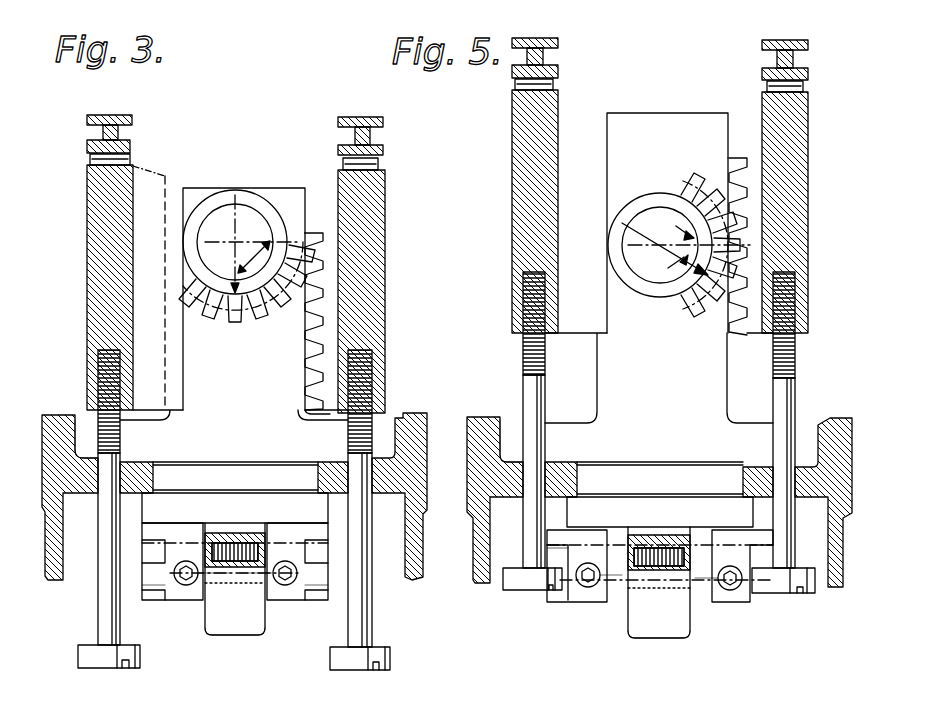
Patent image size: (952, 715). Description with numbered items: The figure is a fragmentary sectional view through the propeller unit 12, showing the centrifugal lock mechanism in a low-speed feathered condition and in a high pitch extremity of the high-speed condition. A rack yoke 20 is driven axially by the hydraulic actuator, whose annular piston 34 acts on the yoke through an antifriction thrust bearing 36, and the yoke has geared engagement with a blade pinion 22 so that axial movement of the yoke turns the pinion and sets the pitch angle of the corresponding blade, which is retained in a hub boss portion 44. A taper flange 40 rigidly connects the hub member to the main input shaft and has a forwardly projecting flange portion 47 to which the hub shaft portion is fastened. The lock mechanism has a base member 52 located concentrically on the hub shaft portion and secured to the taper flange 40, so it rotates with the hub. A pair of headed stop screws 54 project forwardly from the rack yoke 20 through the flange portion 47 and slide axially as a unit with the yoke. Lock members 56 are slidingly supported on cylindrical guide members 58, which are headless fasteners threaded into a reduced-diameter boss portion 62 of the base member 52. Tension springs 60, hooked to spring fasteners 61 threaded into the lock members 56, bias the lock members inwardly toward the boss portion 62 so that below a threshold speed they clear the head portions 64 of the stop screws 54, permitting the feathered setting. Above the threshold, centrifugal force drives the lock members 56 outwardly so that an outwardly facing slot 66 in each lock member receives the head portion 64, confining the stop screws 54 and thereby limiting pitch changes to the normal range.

In FIG. 3, the propeller unit 12 is at (246, 96).
In FIG. 5, the propeller unit 12 is at (580, 32).
In FIG. 3, the rack yoke 20 is at (300, 365).
In FIG. 5, the rack yoke 20 is at (735, 322).
In FIG. 3, the blade pinion 22 is at (258, 322).
In FIG. 5, the blade pinion 22 is at (688, 312).
In FIG. 3, the annular piston 34 is at (340, 122).
In FIG. 5, the annular piston 34 is at (765, 46).
In FIG. 3, the antifriction thrust bearing 36 is at (343, 163).
In FIG. 5, the antifriction thrust bearing 36 is at (768, 87).
In FIG. 3, the taper flange 40 is at (238, 414).
In FIG. 5, the taper flange 40 is at (662, 415).
In FIG. 3, the hub boss portion 44 is at (62, 592).
In FIG. 5, the hub boss portion 44 is at (482, 592).
In FIG. 3, the flange portion 47 is at (80, 418).
In FIG. 5, the flange portion 47 is at (503, 420).
In FIG. 3, the base member 52 is at (292, 521).
In FIG. 5, the base member 52 is at (744, 524).
In FIG. 3, the stop screw 54 is at (372, 602).
In FIG. 5, the stop screw 54 is at (523, 392).
In FIG. 3, the lock member 56 is at (267, 600).
In FIG. 5, the lock member 56 is at (718, 605).
In FIG. 3, the guide member 58 is at (322, 558).
In FIG. 5, the guide member 58 is at (622, 545).
In FIG. 3, the tension spring 60 is at (262, 590).
In FIG. 5, the tension spring 60 is at (686, 594).
In FIG. 3, the spring fastener 61 is at (184, 586).
In FIG. 5, the spring fastener 61 is at (586, 590).
In FIG. 3, the boss portion 62 is at (228, 637).
In FIG. 5, the boss portion 62 is at (655, 640).
In FIG. 3, the head portion 64 is at (81, 647).
In FIG. 5, the head portion 64 is at (517, 592).
In FIG. 3, the slot 66 is at (150, 584).
In FIG. 5, the slot 66 is at (560, 545).